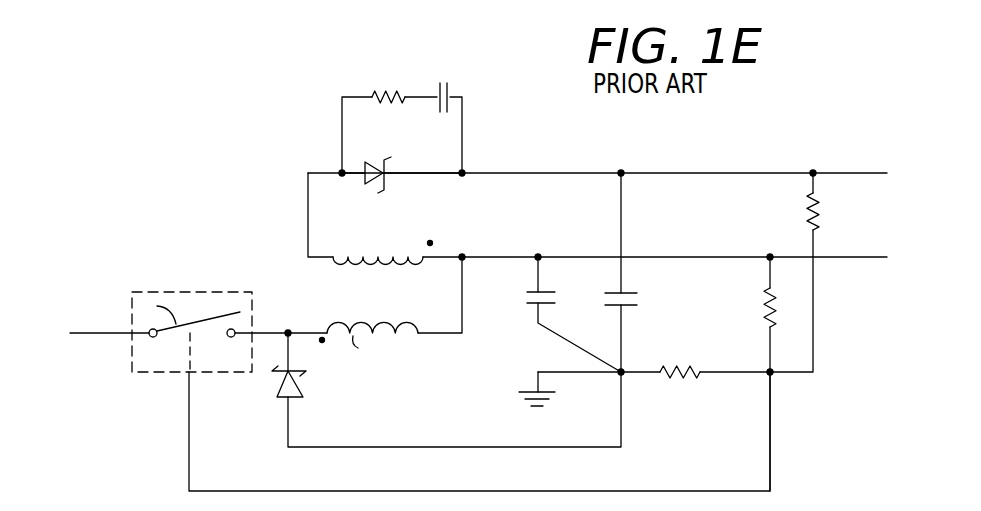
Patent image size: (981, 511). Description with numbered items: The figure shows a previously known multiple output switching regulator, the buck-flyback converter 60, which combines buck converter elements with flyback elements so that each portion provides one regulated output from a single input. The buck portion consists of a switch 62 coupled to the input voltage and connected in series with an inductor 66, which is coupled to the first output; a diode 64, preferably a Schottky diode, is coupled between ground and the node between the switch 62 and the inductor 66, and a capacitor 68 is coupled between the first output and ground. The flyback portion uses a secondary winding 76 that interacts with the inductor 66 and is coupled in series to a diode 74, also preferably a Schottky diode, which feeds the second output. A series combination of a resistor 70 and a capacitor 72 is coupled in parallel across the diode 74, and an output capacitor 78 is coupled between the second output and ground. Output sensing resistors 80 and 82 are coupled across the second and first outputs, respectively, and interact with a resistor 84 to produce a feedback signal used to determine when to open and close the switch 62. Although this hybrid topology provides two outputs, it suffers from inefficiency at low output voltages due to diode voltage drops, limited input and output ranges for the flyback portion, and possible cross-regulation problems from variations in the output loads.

The buck-flyback converter 60 is at (758, 124).
The switch 62 is at (189, 292).
The diode 64 is at (278, 395).
The inductor 66 is at (403, 335).
The capacitor 68 is at (556, 293).
The resistor 70 is at (396, 86).
The capacitor 72 is at (443, 114).
The diode 74 is at (367, 183).
The secondary winding 76 is at (424, 266).
The output capacitor 78 is at (598, 300).
The output sensing resistor 80 is at (805, 215).
The output sensing resistor 82 is at (755, 303).
The resistor 84 is at (684, 378).